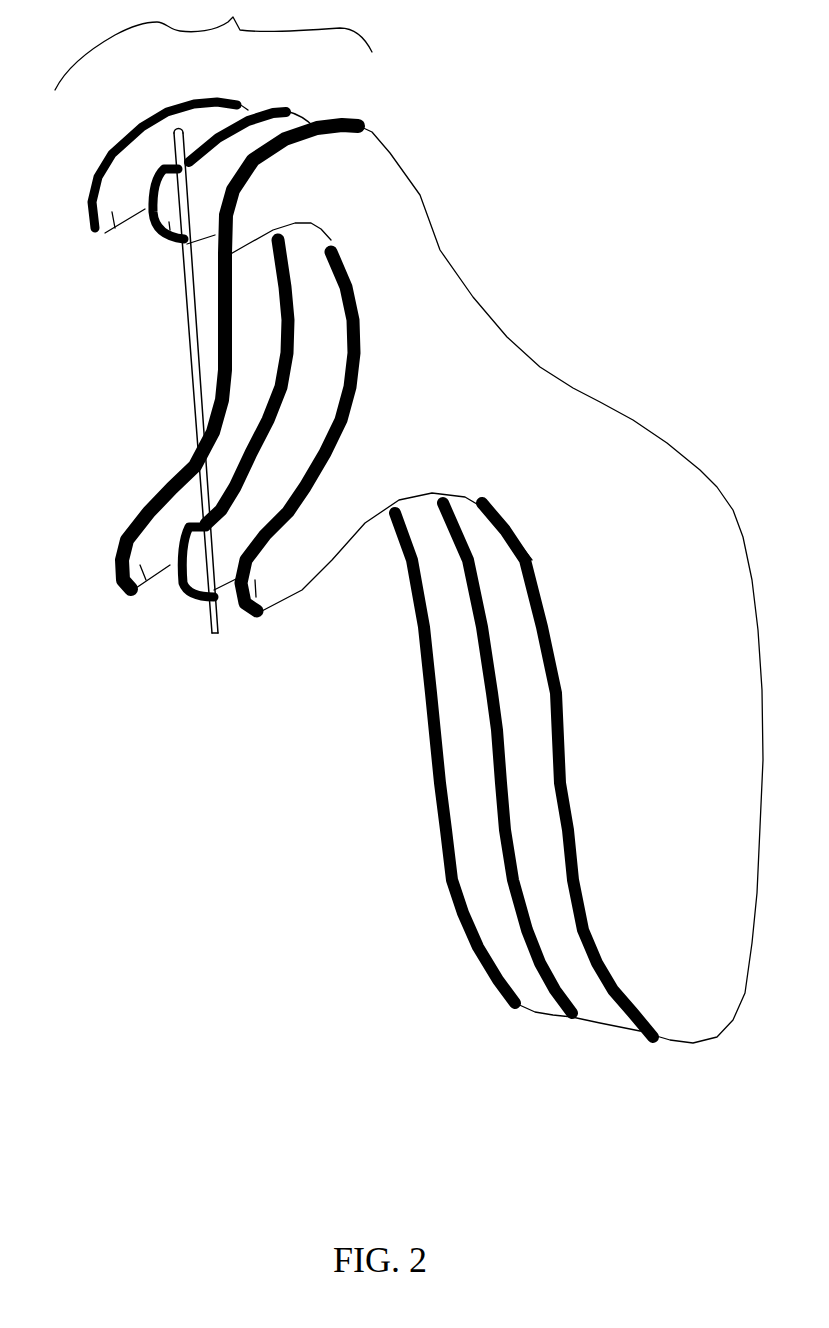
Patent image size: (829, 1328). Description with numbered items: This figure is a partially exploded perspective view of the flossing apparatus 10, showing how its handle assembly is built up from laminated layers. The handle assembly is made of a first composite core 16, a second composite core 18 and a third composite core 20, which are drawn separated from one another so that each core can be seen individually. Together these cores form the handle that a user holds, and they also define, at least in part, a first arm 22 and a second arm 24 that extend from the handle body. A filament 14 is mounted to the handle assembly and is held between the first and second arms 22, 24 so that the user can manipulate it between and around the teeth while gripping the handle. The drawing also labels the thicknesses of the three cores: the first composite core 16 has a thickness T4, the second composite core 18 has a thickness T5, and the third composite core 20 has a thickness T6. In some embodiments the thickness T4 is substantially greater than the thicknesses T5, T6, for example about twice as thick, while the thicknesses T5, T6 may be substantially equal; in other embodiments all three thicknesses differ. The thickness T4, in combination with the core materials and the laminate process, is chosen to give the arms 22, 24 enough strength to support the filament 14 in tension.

The flossing apparatus 10 is at (688, 190).
The filament 14 is at (181, 372).
The first composite core 16 is at (280, 108).
The second composite core 18 is at (113, 144).
The third composite core 20 is at (353, 122).
The first arm 22 is at (233, 230).
The second arm 24 is at (257, 607).
The thickness of the first composite core T4 is at (457, 730).
The thickness of the second composite core T5 is at (463, 690).
The thickness of the third composite core T6 is at (523, 753).